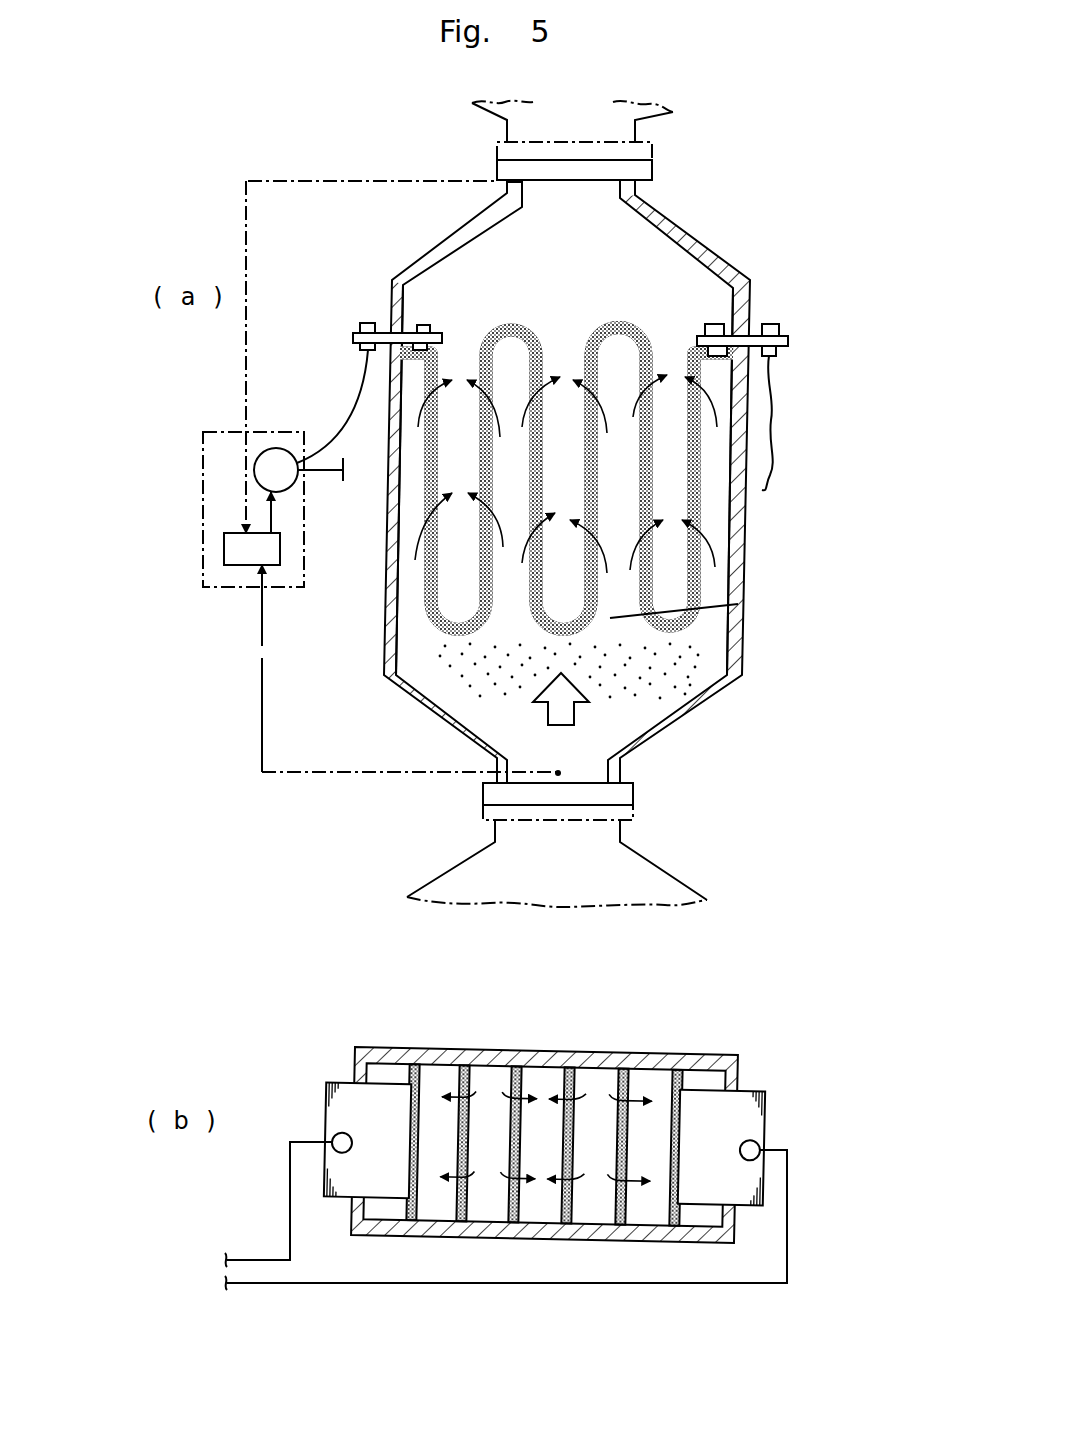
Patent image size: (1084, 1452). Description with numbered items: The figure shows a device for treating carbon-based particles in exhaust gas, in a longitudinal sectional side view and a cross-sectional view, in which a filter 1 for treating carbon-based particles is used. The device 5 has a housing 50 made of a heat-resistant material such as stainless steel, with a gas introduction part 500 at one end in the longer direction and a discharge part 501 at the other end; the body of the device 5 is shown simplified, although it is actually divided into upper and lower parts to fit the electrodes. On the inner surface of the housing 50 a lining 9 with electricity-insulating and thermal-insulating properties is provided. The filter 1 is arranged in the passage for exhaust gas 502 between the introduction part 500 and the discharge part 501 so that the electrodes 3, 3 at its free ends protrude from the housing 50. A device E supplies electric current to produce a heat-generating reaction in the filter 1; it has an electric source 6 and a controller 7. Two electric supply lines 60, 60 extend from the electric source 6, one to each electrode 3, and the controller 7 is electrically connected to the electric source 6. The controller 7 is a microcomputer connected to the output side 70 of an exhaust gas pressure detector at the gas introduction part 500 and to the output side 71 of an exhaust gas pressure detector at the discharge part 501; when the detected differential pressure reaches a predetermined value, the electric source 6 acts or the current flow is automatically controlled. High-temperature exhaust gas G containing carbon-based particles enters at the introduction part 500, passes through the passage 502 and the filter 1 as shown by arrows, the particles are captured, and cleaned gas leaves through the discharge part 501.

The filter 1 is at (426, 567).
The electrode 3 is at (372, 326).
The reactor casing 5 is at (594, 711).
The housing 50 is at (746, 531).
The discharge part 501 is at (598, 190).
The passage for exhaust gas 502 is at (738, 604).
The gas introduction part 500 is at (578, 772).
The electric source 6 is at (259, 462).
The electric supply line 60 is at (327, 470).
The controller 7 is at (248, 560).
The output side of exhaust gas pressure detector 70 is at (560, 787).
The output side of exhaust gas pressure detector 71 is at (570, 185).
The lining 9 is at (735, 650).
The device E is at (352, 478).
The exhaust gas G is at (573, 717).